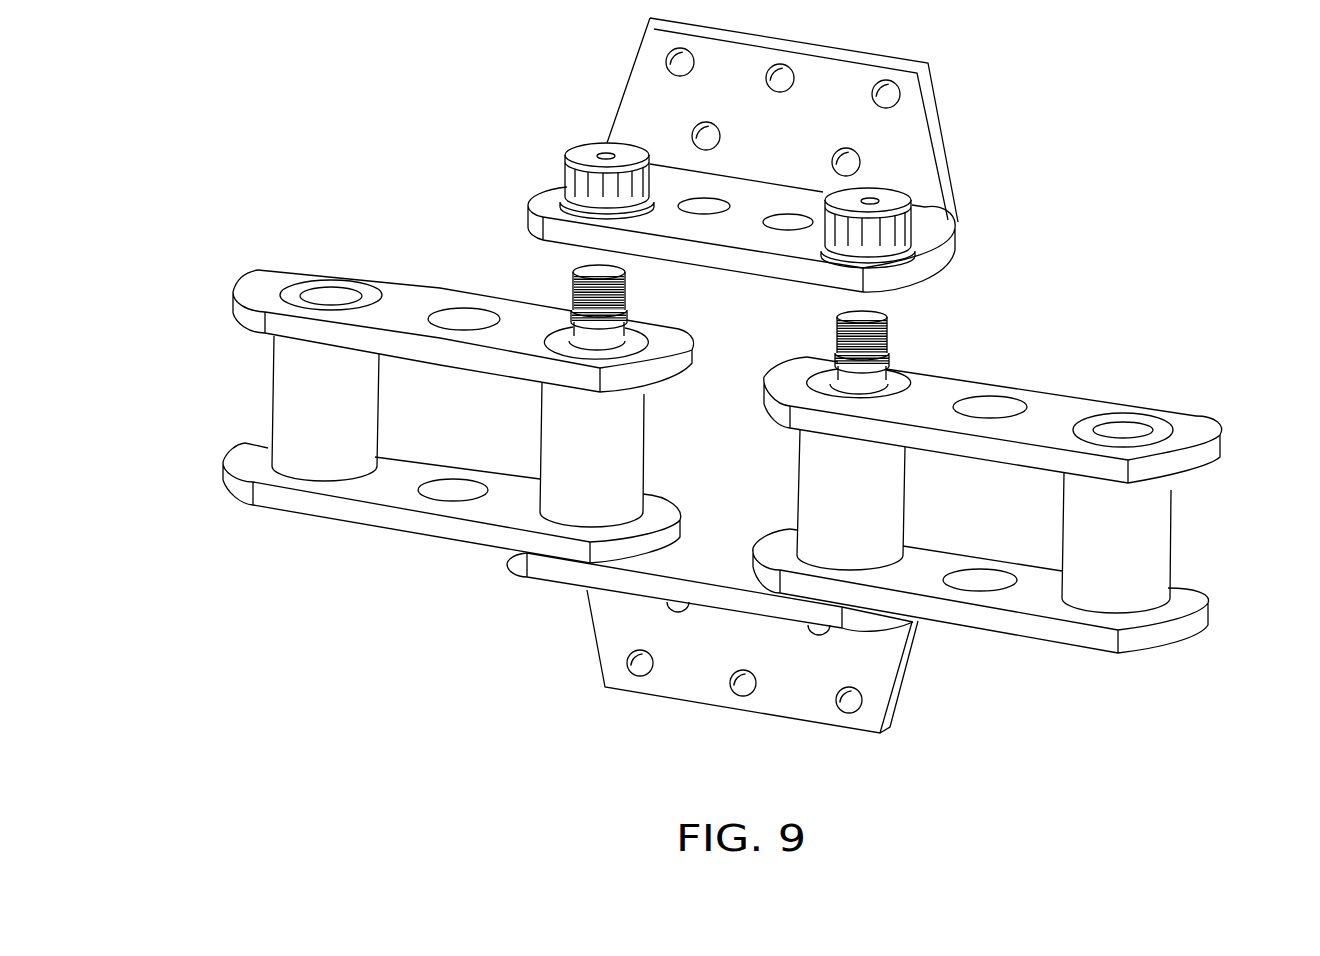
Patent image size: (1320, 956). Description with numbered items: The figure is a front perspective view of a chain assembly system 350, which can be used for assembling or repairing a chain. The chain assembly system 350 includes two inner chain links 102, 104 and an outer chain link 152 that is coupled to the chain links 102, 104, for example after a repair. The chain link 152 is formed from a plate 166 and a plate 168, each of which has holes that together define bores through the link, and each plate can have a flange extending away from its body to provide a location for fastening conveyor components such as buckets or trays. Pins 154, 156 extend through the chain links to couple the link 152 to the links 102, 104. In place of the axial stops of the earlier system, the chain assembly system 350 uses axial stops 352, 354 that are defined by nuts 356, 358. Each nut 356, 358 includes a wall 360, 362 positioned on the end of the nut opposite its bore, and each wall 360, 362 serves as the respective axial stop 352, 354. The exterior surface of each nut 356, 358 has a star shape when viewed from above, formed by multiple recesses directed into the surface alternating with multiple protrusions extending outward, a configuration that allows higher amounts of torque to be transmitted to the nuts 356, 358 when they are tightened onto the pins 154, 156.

The chain assembly system 350 is at (406, 84).
The axial stop 352 is at (573, 125).
The axial stop 354 is at (898, 171).
The nut 356 is at (590, 175).
The nut 358 is at (868, 230).
The wall 360 is at (610, 157).
The wall 362 is at (885, 197).
The chain link 152 is at (957, 72).
The plate 168 is at (572, 228).
The plate 166 is at (632, 585).
The chain link 102 is at (303, 235).
The chain link 104 is at (1166, 390).
The pin 154 is at (597, 332).
The pin 156 is at (868, 382).